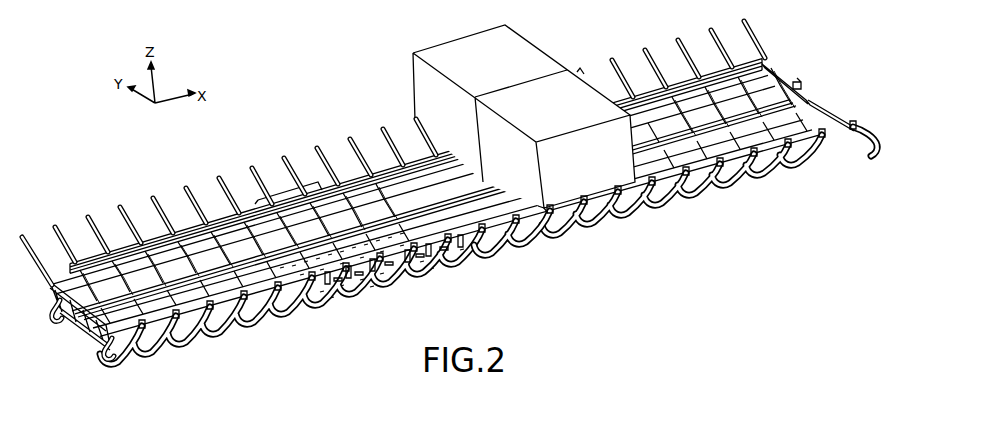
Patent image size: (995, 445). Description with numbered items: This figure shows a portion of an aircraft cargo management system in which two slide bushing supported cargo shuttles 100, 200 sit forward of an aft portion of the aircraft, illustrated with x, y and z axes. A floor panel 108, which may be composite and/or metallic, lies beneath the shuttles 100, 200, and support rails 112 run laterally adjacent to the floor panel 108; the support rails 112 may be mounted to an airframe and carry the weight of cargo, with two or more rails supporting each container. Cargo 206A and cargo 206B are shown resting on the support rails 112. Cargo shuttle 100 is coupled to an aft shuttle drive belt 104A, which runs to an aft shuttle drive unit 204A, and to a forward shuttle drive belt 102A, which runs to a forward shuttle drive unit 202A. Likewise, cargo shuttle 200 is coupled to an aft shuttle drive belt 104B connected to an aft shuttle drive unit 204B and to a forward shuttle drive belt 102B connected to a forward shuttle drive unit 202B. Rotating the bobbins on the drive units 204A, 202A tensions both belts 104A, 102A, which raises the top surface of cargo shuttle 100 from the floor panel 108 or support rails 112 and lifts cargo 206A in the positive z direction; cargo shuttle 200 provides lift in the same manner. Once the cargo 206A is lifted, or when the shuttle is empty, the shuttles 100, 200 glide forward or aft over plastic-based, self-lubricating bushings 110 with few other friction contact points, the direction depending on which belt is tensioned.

The slide bushing supported cargo shuttle 100 is at (485, 250).
The forward shuttle drive belt 102A is at (745, 162).
The forward shuttle drive belt 102B is at (692, 108).
The aft shuttle drive belt 104A is at (268, 308).
The aft shuttle drive belt 104B is at (230, 213).
The floor panel 108 is at (128, 265).
The bushings 110 is at (457, 162).
The support rails 112 is at (543, 213).
The slide bushing supported cargo shuttle 200 is at (320, 180).
The forward shuttle drive unit 202A is at (848, 117).
The forward shuttle drive unit 202B is at (797, 83).
The aft shuttle drive unit 204A is at (115, 355).
The aft shuttle drive unit 204B is at (53, 313).
The cargo 206A is at (580, 200).
The cargo 206B is at (418, 52).